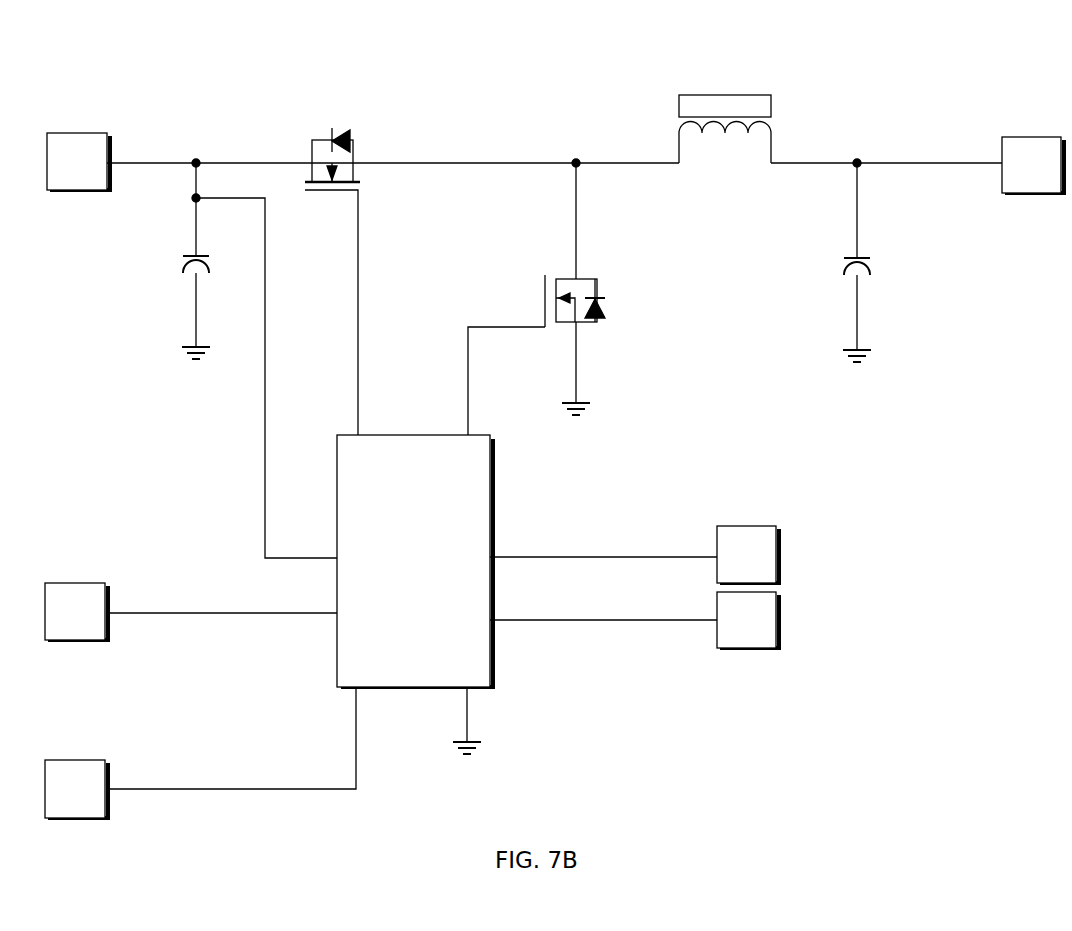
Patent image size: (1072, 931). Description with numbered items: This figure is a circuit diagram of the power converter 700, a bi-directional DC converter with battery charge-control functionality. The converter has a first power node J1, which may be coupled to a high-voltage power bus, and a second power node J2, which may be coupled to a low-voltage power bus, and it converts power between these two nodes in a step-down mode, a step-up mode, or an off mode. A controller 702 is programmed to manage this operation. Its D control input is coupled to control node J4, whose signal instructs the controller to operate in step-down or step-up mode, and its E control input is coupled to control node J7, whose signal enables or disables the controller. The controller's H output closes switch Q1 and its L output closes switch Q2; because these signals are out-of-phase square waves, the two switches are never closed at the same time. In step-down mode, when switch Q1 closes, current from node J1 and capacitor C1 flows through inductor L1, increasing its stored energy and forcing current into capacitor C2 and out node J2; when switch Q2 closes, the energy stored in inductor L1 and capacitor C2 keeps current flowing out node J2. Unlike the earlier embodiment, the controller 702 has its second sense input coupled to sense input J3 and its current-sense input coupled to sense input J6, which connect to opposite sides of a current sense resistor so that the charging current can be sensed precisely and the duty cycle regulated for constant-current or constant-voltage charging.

The power converter 700 is at (911, 70).
The controller 702 is at (415, 594).
The first power node J1 is at (78, 161).
The second power node J2 is at (1033, 165).
The sense input J3 is at (748, 554).
The control node J4 is at (76, 789).
The sense input J6 is at (748, 620).
The control node J7 is at (76, 611).
The capacitor C1 is at (190, 256).
The capacitor C2 is at (850, 258).
The inductor L1 is at (679, 106).
The switch Q1 is at (312, 145).
The switch Q2 is at (597, 286).